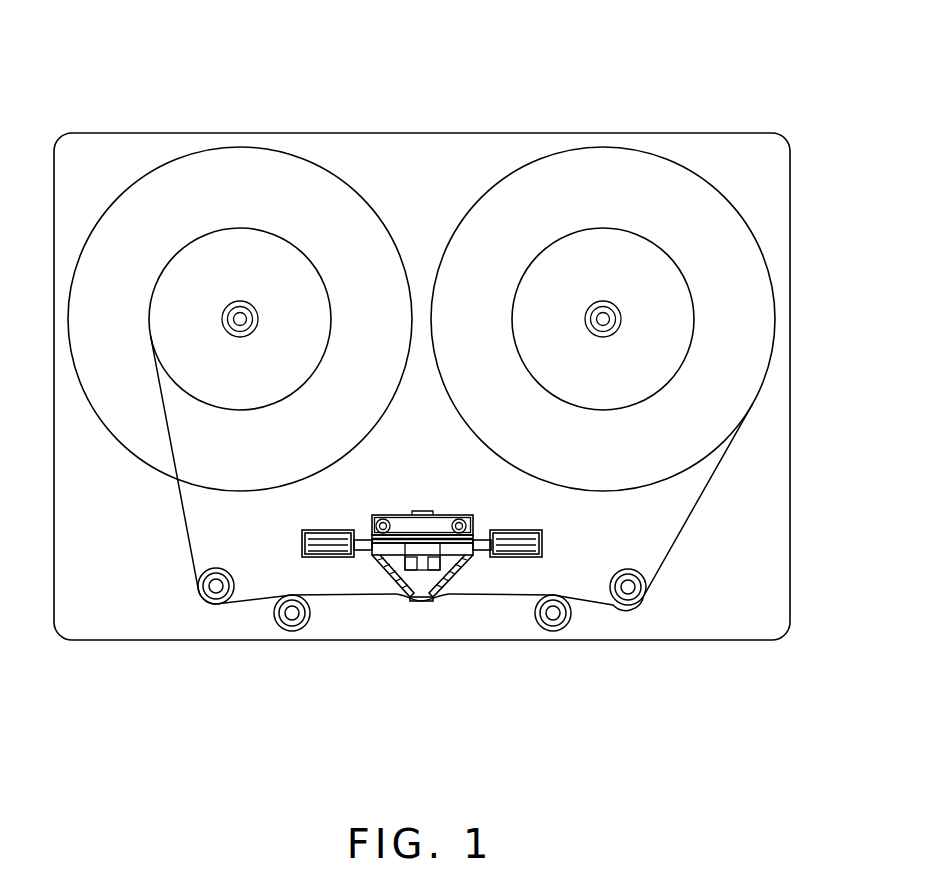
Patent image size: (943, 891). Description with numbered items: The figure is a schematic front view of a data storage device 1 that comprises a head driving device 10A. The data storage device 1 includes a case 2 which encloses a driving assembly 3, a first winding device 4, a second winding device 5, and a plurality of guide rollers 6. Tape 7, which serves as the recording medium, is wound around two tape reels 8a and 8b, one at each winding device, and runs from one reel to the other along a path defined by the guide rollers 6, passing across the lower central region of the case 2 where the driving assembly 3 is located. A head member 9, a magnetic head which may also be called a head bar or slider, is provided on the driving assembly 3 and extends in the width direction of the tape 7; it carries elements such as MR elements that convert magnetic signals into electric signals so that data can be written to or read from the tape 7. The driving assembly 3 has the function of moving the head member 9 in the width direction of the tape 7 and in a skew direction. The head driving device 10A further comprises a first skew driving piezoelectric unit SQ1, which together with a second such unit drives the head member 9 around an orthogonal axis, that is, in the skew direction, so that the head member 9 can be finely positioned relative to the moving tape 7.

The data storage device 1 is at (638, 99).
The case 2 is at (413, 133).
The driving assembly 3 is at (440, 501).
The first winding device 4 is at (173, 254).
The second winding device 5 is at (670, 257).
The guide rollers 6 is at (203, 605).
The tape 7 is at (685, 523).
The tape reel 8a is at (127, 238).
The tape reel 8b is at (720, 239).
The head member 9 is at (418, 603).
The first skew driving piezoelectric unit SQ1 is at (394, 585).
The head driving device 10A is at (466, 561).